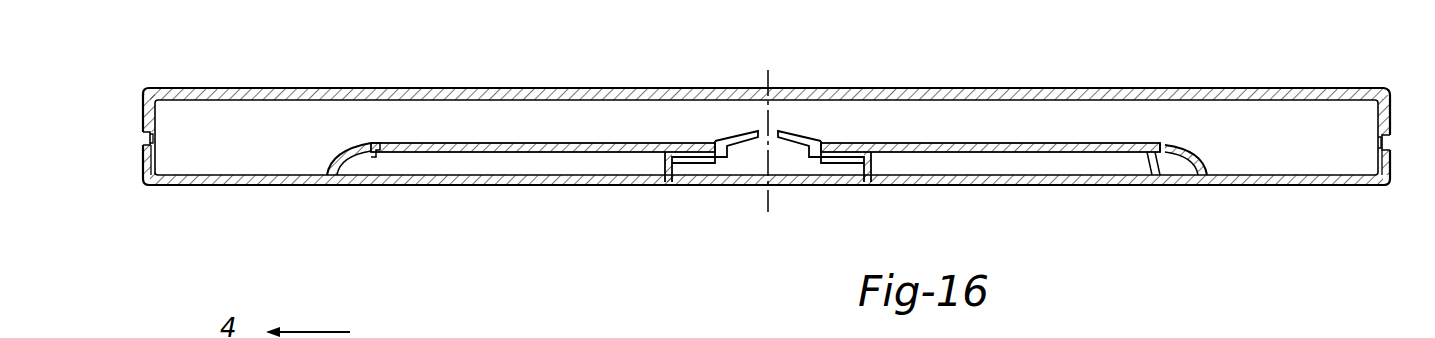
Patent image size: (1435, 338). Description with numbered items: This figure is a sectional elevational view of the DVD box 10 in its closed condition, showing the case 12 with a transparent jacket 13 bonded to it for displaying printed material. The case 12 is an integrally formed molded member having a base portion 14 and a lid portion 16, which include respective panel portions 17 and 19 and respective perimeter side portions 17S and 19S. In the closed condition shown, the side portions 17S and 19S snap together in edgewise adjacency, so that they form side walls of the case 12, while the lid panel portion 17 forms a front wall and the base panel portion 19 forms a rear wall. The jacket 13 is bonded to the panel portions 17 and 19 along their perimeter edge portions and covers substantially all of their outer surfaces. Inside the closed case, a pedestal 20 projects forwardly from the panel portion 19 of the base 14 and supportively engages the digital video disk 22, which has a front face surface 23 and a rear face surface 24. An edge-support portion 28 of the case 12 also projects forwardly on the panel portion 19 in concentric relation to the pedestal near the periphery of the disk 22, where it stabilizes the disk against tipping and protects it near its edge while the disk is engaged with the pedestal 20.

The DVD box 10 is at (1134, 217).
The case 12 is at (1387, 187).
The transparent jacket 13 is at (357, 186).
The base portion 14 is at (143, 184).
The lid portion 16 is at (143, 90).
The panel portion 17 is at (309, 100).
The perimeter side portion 17S is at (155, 128).
The panel portion 19 is at (512, 177).
The perimeter side portion 19S is at (1378, 153).
The pedestal 20 is at (803, 140).
The digital video disk 22 is at (1088, 144).
The front face surface 23 is at (584, 144).
The rear face surface 24 is at (607, 156).
The edge-support portion 28 is at (1194, 151).